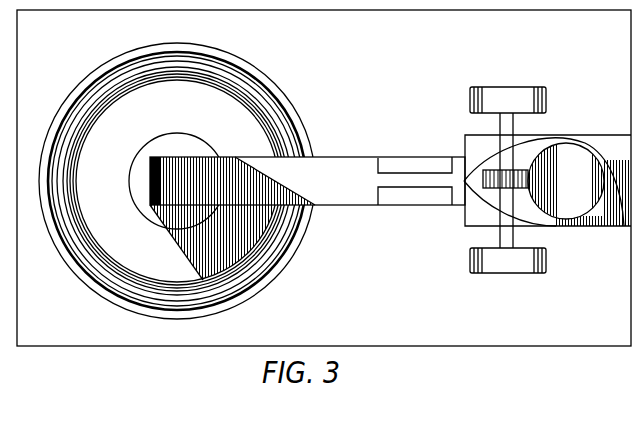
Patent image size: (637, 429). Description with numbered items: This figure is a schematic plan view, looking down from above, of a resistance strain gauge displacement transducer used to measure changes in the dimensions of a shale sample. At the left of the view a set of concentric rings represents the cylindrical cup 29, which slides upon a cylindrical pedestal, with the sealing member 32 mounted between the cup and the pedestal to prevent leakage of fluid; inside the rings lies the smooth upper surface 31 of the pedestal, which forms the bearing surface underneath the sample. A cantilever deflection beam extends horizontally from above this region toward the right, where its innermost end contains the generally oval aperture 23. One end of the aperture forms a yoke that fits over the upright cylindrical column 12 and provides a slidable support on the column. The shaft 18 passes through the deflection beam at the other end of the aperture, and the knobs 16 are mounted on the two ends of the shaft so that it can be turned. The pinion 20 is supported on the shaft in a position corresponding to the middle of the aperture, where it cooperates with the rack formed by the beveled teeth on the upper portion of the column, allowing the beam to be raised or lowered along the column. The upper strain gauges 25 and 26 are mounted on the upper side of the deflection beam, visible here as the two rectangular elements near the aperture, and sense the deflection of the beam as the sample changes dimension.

The column 12 is at (577, 150).
The knobs 16 is at (508, 86).
The shaft 18 is at (512, 237).
The pinion 20 is at (492, 167).
The oval aperture 23 is at (492, 195).
The upper strain gauge 25 is at (395, 163).
The upper strain gauge 26 is at (402, 197).
The cylindrical cup 29 is at (258, 78).
The upper surface 31 is at (258, 143).
The sealing member 32 is at (97, 90).